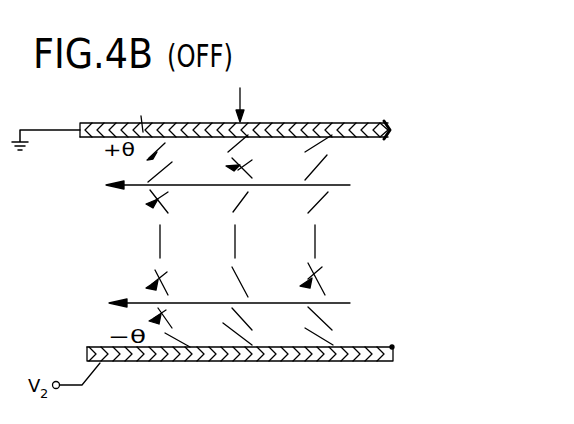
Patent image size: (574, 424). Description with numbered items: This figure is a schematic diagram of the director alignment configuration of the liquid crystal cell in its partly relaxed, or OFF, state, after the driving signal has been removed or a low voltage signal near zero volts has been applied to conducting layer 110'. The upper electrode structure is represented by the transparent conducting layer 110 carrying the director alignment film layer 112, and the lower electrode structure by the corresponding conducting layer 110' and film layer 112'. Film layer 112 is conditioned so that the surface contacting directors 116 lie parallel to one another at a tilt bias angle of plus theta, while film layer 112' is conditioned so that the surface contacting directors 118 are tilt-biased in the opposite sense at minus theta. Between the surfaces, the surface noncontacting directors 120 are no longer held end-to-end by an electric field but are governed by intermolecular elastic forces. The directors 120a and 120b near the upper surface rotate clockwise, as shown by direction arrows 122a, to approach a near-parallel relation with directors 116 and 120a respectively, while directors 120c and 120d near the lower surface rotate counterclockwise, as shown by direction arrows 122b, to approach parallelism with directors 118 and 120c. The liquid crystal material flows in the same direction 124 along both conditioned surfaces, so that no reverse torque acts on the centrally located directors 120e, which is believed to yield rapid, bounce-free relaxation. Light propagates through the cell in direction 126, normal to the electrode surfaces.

The electrically conducting layer 110 is at (206, 117).
The director alignment film layer 112 is at (213, 149).
The surface contacting directors 116 is at (206, 122).
The light propagation direction 126 is at (240, 96).
The surface noncontacting directors 120a is at (162, 175).
The direction arrows 122a is at (246, 172).
The liquid crystal material flow direction 124 is at (350, 185).
The surface noncontacting directors 120b is at (240, 204).
The surface noncontacting directors 120 is at (154, 239).
The centrally located surface noncontacting directors 120e is at (161, 247).
The direction arrows 122b is at (165, 271).
The surface noncontacting directors 120d is at (240, 278).
The surface noncontacting directors 120c is at (241, 313).
The surface contacting directors 118 is at (175, 334).
The electrically conducting layer 110' is at (215, 353).
The director alignment film layer 112' is at (217, 332).